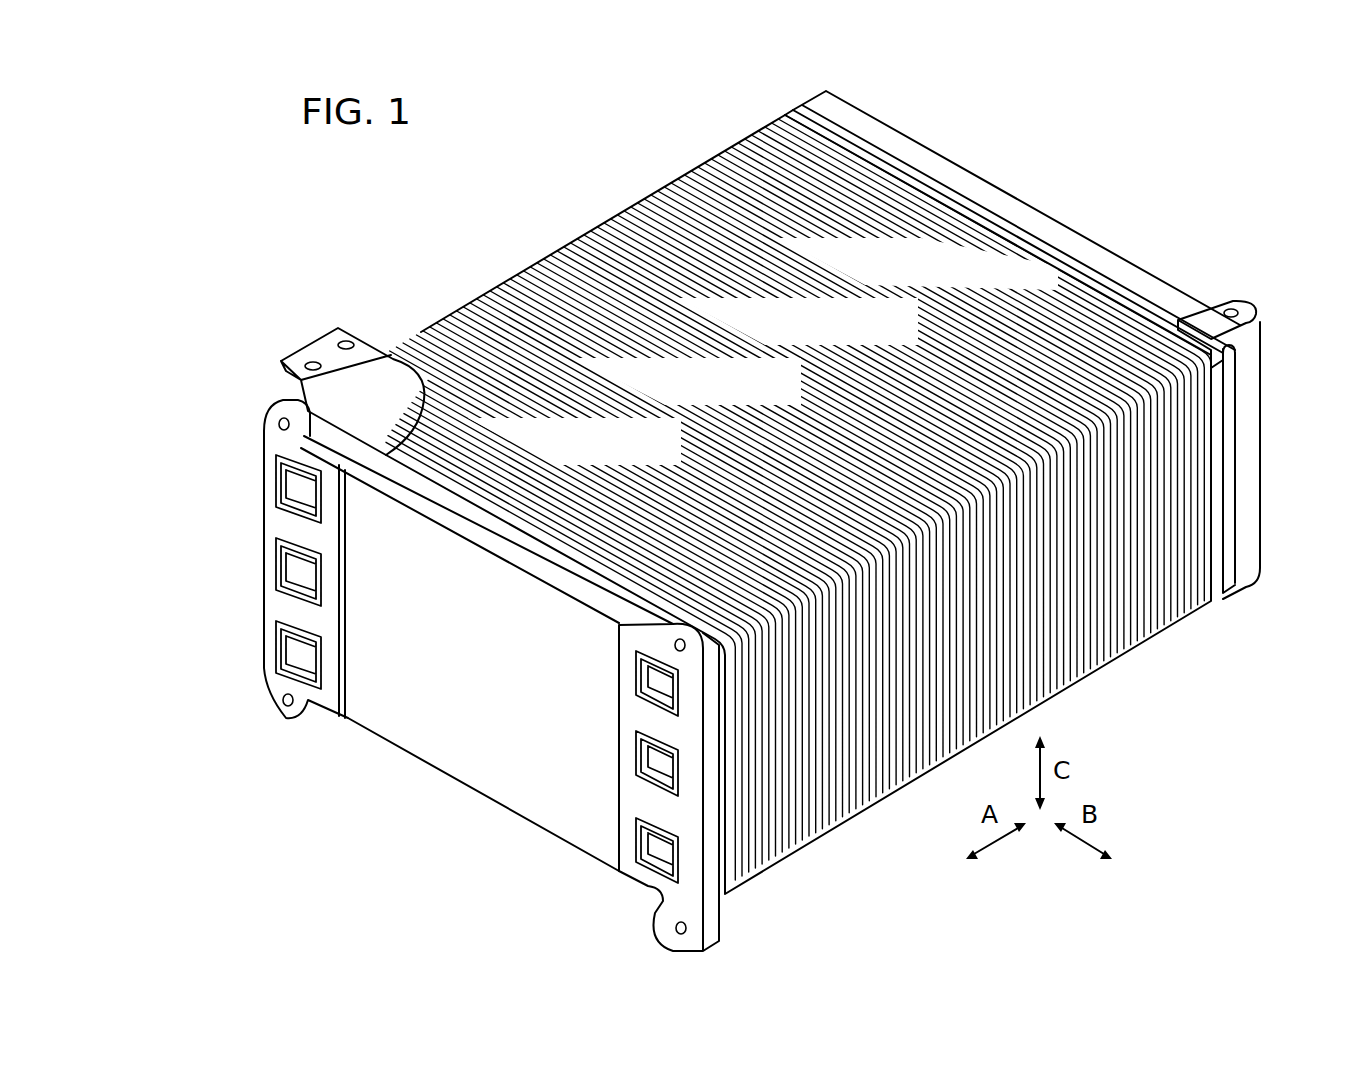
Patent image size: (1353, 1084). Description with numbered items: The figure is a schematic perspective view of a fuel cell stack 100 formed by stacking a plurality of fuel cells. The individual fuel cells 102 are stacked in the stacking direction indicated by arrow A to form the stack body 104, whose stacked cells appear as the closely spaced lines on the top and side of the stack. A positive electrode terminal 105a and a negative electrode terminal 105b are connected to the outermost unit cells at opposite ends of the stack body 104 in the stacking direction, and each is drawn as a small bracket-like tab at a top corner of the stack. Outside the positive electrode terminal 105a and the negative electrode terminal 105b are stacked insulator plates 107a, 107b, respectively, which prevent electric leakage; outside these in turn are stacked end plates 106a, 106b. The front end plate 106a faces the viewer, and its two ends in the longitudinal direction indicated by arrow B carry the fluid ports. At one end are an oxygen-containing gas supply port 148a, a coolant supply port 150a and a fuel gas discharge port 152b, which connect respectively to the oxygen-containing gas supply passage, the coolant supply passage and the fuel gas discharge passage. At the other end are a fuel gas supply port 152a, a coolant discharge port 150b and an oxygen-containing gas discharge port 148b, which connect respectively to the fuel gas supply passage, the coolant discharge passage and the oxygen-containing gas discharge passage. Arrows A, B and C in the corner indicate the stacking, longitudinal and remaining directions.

The fuel cell stack 100 is at (237, 229).
The fuel cell unit 102 is at (561, 236).
The stack body 104 is at (620, 152).
The positive electrode terminal 105a is at (300, 352).
The negative electrode terminal 105b is at (1203, 322).
The end plate 106a is at (514, 792).
The end plate 106b is at (1038, 189).
The insulator plate 107a is at (717, 860).
The insulator plate 107b is at (914, 193).
The oxygen-containing gas supply port 148a is at (655, 672).
The oxygen-containing gas discharge port 148b is at (288, 640).
The coolant supply port 150a is at (655, 755).
The coolant discharge port 150b is at (285, 566).
The fuel gas supply port 152a is at (283, 483).
The fuel gas discharge port 152b is at (642, 866).